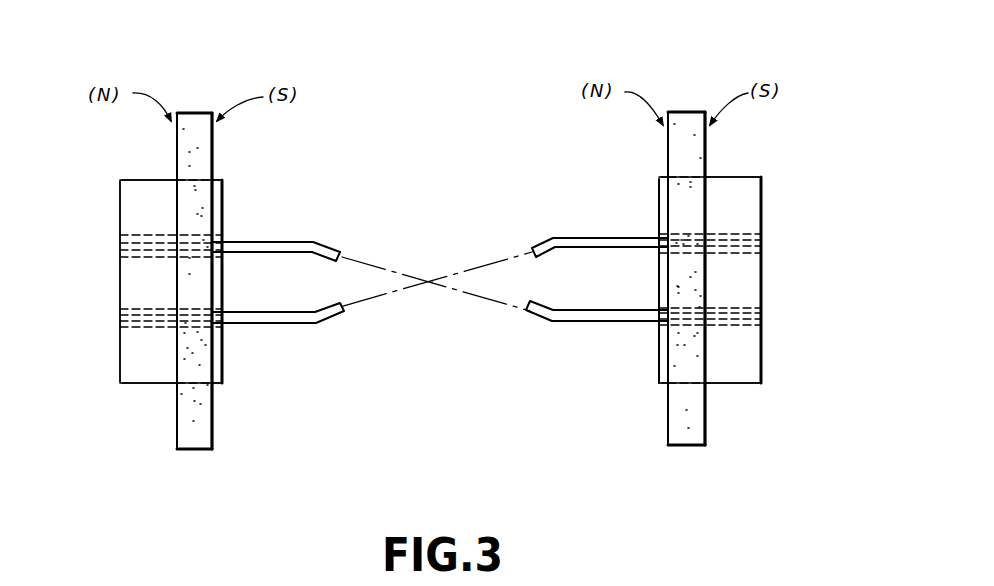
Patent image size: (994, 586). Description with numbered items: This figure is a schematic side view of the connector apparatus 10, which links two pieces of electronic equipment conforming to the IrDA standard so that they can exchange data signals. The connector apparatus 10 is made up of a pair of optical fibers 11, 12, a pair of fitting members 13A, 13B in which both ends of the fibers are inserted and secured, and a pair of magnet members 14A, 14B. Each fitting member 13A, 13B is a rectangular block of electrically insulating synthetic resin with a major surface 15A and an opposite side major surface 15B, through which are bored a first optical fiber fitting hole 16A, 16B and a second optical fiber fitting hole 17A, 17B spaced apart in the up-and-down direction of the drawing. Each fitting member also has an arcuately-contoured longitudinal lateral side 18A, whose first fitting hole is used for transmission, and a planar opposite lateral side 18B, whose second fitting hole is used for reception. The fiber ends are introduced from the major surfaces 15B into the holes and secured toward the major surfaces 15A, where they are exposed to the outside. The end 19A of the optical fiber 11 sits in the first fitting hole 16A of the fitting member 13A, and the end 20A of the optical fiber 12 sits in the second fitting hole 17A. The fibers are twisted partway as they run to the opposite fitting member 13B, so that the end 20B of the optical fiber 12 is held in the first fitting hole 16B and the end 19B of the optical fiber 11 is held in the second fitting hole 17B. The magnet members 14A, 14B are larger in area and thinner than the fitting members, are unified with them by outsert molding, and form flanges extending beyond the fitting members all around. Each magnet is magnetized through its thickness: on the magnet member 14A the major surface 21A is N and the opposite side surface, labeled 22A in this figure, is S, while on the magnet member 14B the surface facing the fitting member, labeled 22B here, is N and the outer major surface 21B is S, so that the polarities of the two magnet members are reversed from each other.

The connector apparatus 10 is at (572, 73).
The optical fiber 11 is at (341, 252).
The optical fiber 12 is at (333, 318).
The fitting member 13A is at (145, 372).
The fitting member 13B is at (762, 375).
The magnet member 14A is at (213, 420).
The magnet member 14B is at (673, 417).
The major surface 15A is at (118, 365).
The opposite side major surface 15B is at (227, 285).
The first optical fiber fitting hole 16A is at (152, 235).
The first optical fiber fitting hole 16B is at (730, 233).
The second optical fiber fitting hole 17A is at (152, 309).
The second optical fiber fitting hole 17B is at (733, 305).
The longitudinal lateral side 18A is at (143, 180).
The opposite lateral side 18B is at (155, 385).
The end of optical fiber 19A is at (120, 243).
The end of optical fiber 19B is at (755, 319).
The end of optical fiber 20A is at (120, 320).
The end of optical fiber 20B is at (757, 241).
The major surface of magnet member 21A is at (175, 158).
The opposite side major surface of magnet member 21B is at (707, 153).
The south pole face of magnet 22A is at (214, 160).
The south pole face of magnet 22B is at (667, 157).